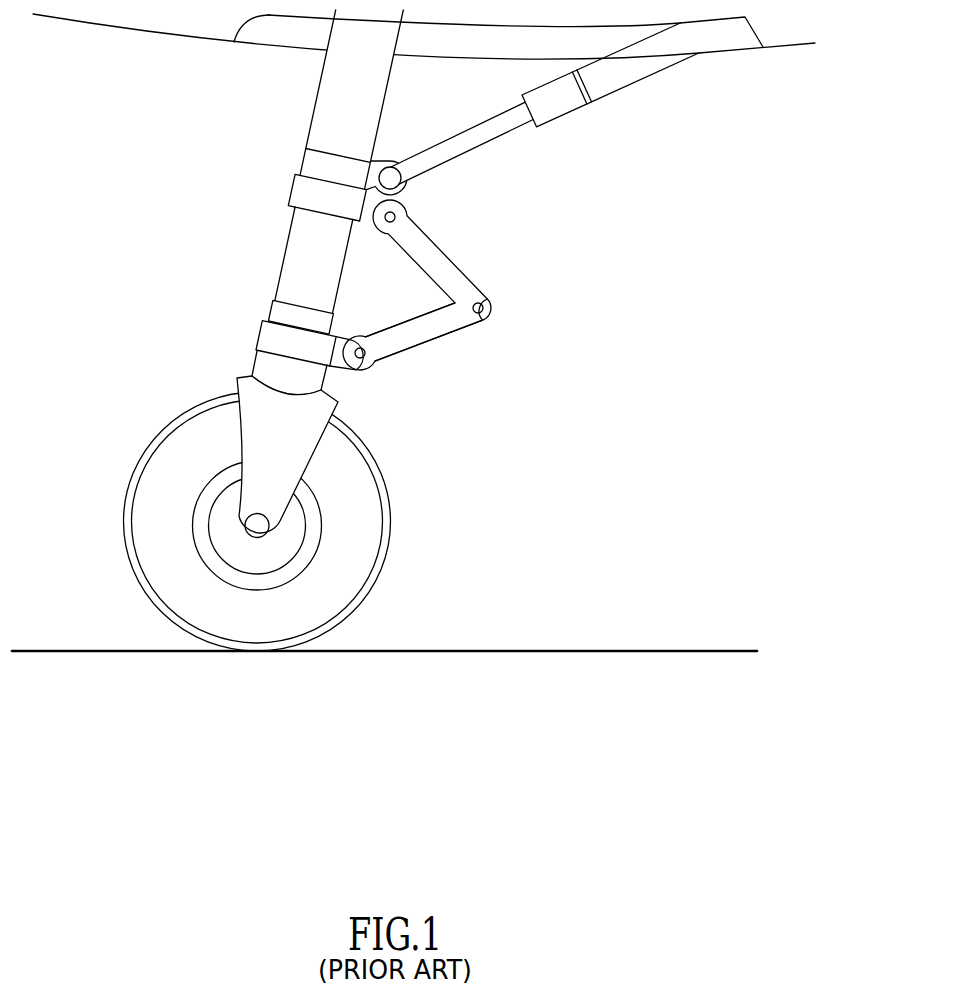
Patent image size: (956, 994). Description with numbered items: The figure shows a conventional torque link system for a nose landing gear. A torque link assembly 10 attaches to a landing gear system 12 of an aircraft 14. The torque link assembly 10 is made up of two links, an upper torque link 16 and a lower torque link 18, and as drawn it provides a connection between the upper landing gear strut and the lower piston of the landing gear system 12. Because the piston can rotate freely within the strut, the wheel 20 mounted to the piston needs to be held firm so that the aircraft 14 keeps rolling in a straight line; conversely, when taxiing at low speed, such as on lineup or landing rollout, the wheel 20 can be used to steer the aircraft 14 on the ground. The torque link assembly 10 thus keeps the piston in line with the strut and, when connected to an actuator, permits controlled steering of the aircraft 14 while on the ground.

The torque link assembly 10 is at (411, 330).
The landing gear system 12 is at (329, 202).
The aircraft 14 is at (180, 36).
The upper torque link 16 is at (430, 258).
The lower torque link 18 is at (422, 330).
The wheel 20 is at (390, 515).